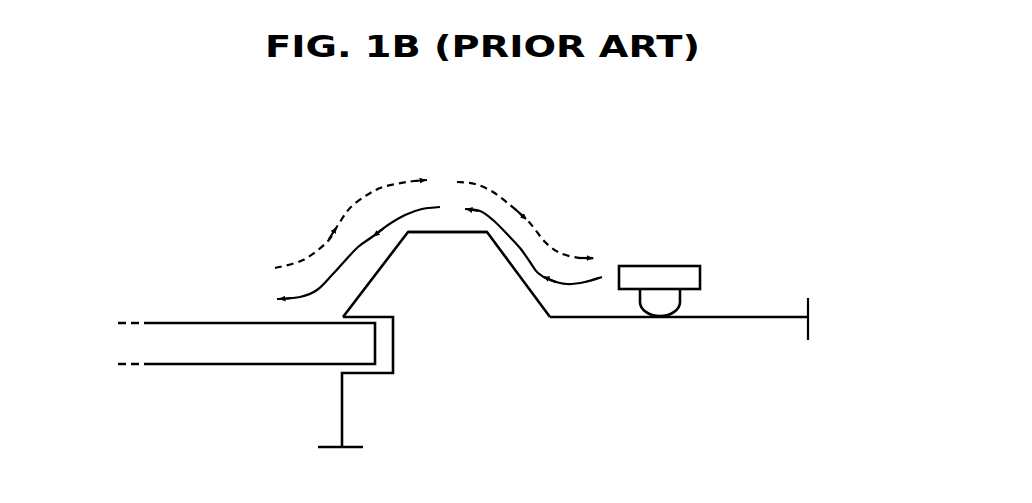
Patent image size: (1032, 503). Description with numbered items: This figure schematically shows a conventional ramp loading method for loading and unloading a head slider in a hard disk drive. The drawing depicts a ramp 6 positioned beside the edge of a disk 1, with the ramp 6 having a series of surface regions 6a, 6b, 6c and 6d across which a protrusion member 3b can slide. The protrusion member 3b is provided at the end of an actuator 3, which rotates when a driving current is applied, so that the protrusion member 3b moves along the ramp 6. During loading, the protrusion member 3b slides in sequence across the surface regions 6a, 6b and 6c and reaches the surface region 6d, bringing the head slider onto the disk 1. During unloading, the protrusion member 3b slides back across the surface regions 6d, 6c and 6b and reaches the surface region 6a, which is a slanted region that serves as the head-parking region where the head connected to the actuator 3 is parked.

The disk 1 is at (175, 323).
The actuator 3 is at (647, 263).
The protrusion member 3b is at (662, 306).
The ramp 6 is at (466, 328).
The surface region 6a is at (737, 317).
The surface region 6b is at (530, 262).
The surface region 6c is at (449, 232).
The surface region 6d is at (375, 275).